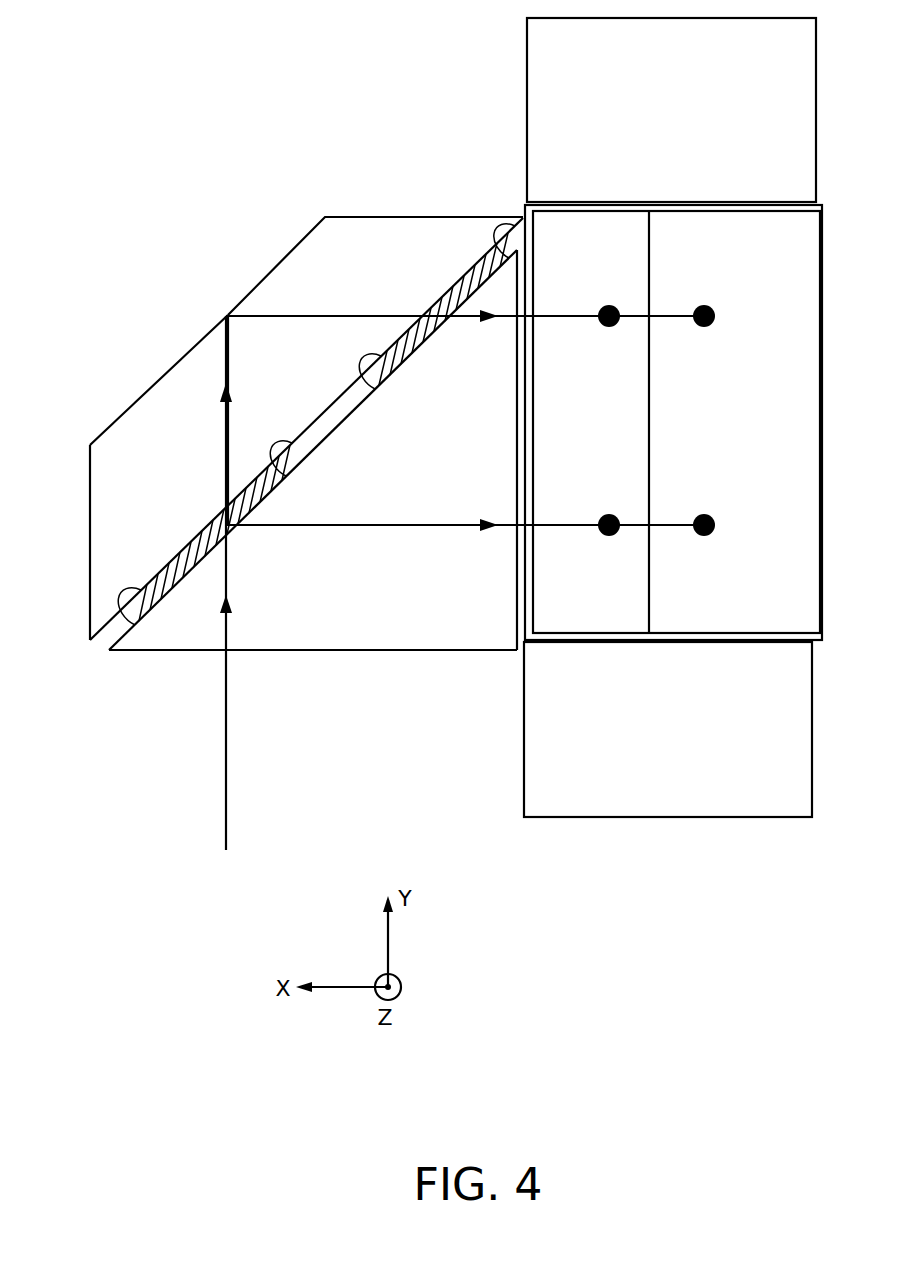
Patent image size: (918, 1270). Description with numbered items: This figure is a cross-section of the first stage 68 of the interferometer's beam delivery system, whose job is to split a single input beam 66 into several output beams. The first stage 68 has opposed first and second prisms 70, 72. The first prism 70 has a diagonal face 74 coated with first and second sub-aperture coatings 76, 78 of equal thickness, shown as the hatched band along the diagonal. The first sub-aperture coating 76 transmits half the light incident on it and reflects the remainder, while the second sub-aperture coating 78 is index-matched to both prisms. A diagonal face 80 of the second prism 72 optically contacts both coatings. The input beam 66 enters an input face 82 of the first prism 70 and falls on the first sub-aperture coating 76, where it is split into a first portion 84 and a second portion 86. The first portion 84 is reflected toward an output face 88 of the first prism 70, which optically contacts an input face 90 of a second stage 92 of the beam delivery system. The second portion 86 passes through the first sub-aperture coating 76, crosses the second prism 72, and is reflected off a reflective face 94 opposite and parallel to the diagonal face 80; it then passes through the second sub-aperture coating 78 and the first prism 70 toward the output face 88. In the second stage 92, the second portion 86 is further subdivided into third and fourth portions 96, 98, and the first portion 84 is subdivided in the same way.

The input beam 66 is at (232, 775).
The first stage 68 is at (316, 186).
The first prism 70 is at (427, 454).
The second prism 72 is at (152, 434).
The diagonal face 74 is at (130, 632).
The first sub-aperture coating 76 is at (185, 545).
The second sub-aperture coating 78 is at (440, 300).
The diagonal face 80 is at (118, 608).
The input face 82 is at (275, 655).
The first portion 84 is at (320, 530).
The second portion 86 is at (230, 405).
The output face 88 is at (515, 622).
The input face 90 is at (533, 596).
The second stage 92 is at (658, 850).
The reflective face 94 is at (292, 256).
The third portion 96 is at (609, 305).
The fourth portion 98 is at (704, 305).